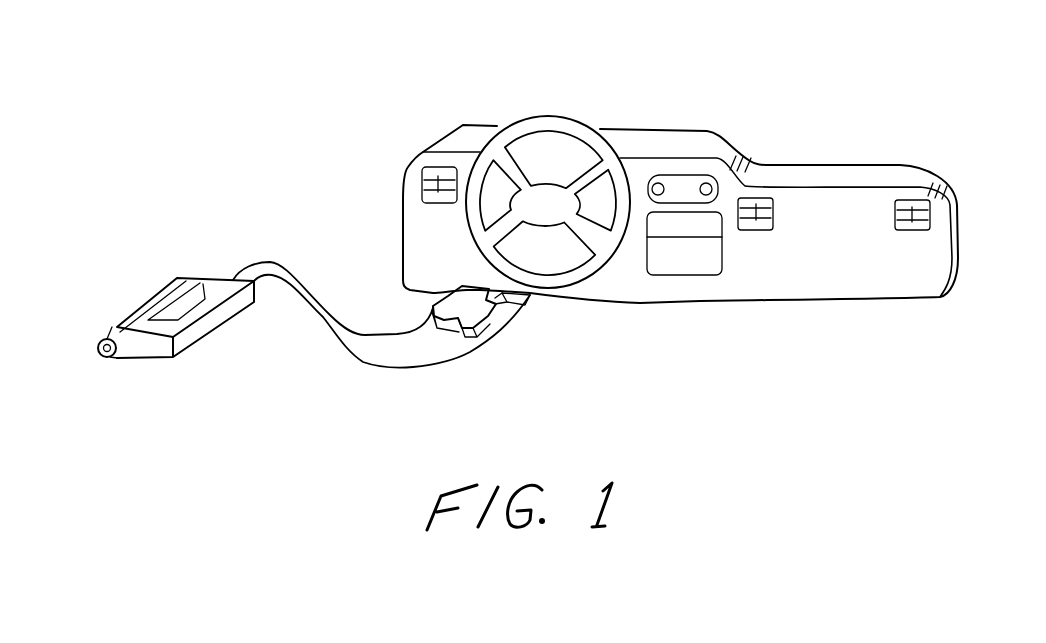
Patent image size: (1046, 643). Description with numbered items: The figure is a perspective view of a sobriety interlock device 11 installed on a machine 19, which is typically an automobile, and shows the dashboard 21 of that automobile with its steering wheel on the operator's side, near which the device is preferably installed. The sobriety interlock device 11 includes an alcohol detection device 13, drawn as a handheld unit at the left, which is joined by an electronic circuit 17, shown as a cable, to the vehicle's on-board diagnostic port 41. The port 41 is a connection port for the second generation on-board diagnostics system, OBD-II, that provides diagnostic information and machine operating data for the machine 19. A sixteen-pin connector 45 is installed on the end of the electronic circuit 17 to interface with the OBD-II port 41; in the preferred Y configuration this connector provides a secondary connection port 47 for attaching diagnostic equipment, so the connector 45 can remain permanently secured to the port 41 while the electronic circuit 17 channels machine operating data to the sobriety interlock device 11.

The sobriety interlock device 11 is at (180, 178).
The alcohol detection device 13 is at (150, 300).
The electronic circuit 17 is at (277, 260).
The machine 19 is at (490, 77).
The dashboard 21 is at (663, 137).
The on-board diagnostic port 41 is at (500, 297).
The sixteen-pin connector 45 is at (449, 281).
The secondary connection port 47 is at (495, 304).